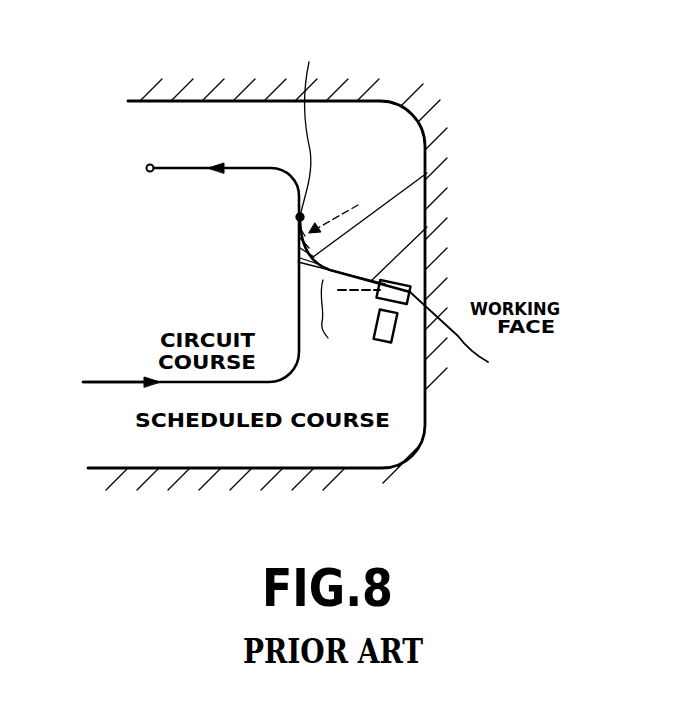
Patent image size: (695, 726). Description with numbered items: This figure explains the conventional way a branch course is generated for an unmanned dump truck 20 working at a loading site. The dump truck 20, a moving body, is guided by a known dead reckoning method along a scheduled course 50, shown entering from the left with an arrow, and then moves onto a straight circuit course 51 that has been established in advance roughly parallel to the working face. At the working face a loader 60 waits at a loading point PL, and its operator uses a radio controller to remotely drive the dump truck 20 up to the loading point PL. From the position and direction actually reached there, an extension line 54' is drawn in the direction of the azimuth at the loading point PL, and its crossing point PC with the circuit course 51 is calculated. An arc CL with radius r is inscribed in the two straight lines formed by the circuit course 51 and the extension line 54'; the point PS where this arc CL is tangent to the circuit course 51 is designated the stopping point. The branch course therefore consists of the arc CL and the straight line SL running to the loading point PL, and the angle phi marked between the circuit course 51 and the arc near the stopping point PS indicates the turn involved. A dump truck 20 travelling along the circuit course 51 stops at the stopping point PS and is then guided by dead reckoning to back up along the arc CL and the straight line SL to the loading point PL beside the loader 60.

The unmanned dump truck 20 is at (399, 279).
The scheduled course 50 is at (110, 383).
The circuit course 51 is at (297, 316).
The extension line 54' is at (321, 322).
The loader 60 is at (380, 341).
The stopping point PS is at (302, 126).
The loading point PL is at (410, 301).
The crossing point PC is at (298, 262).
The arc CL is at (427, 173).
The straight line SL is at (427, 227).
The angle phi is at (300, 248).
The radius r is at (333, 214).